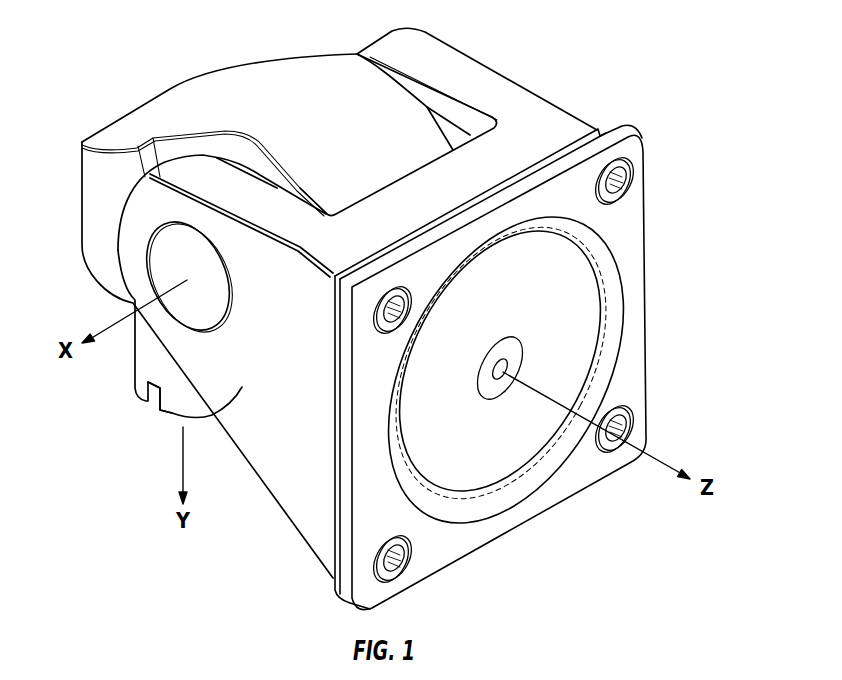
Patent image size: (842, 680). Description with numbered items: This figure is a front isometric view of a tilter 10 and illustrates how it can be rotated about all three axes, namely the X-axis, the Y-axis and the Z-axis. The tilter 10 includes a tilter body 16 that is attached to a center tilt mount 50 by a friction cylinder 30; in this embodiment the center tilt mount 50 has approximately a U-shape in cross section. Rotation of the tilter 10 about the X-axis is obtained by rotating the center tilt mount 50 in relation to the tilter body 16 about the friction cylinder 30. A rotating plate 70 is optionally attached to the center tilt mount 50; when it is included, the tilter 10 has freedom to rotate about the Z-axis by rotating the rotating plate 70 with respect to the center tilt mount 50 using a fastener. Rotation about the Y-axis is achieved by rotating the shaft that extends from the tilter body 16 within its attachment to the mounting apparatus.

The tilter 10 is at (636, 47).
The tilter body 16 is at (218, 104).
The friction cylinder 30 is at (210, 302).
The center tilt mount 50 is at (183, 418).
The rotating plate 70 is at (500, 493).